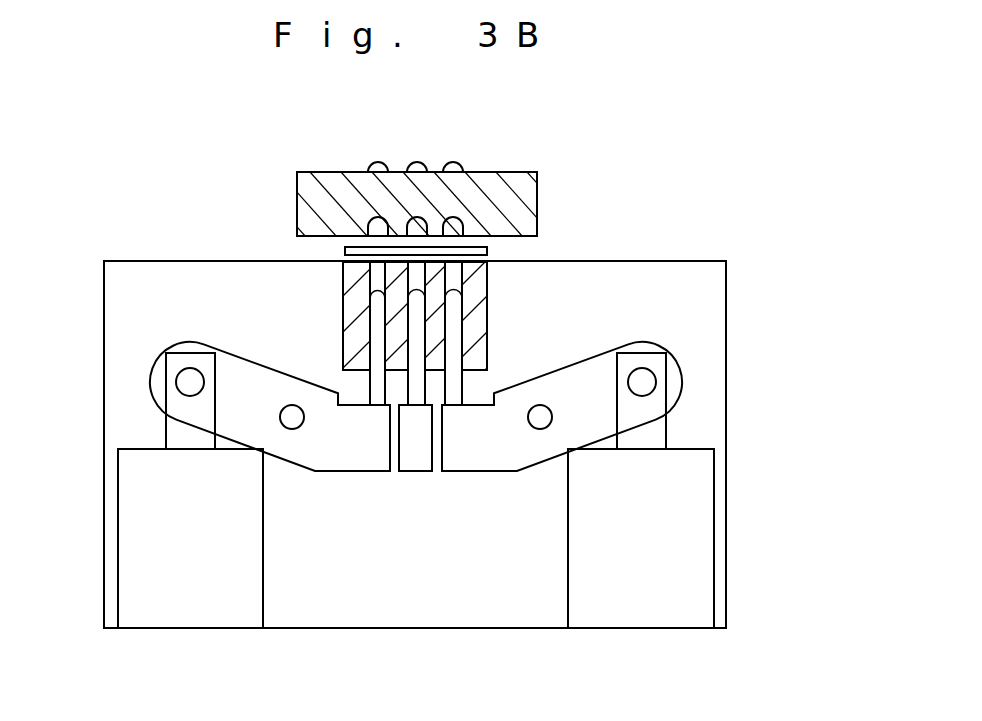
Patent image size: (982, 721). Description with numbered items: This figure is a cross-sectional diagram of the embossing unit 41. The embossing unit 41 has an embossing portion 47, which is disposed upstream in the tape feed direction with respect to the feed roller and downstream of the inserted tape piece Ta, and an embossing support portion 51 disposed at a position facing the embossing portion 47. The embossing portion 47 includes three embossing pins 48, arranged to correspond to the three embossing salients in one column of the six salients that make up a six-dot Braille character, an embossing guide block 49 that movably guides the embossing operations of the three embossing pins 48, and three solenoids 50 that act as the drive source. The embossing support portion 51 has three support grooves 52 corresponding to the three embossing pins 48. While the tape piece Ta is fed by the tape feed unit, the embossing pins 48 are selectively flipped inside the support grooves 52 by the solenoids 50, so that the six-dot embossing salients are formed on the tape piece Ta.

The embossing unit 41 is at (650, 126).
The embossing portion 47 is at (698, 247).
The embossing pins 48 is at (462, 383).
The embossing guide block 49 is at (488, 300).
The solenoids 50 is at (130, 520).
The embossing support portion 51 is at (538, 204).
The support grooves 52 is at (451, 215).
The tape piece Ta is at (345, 250).